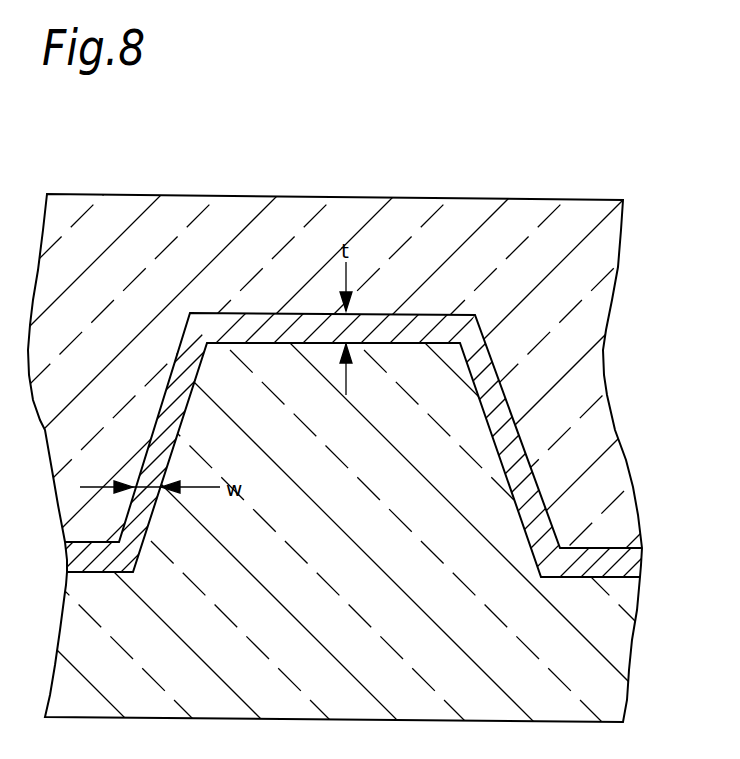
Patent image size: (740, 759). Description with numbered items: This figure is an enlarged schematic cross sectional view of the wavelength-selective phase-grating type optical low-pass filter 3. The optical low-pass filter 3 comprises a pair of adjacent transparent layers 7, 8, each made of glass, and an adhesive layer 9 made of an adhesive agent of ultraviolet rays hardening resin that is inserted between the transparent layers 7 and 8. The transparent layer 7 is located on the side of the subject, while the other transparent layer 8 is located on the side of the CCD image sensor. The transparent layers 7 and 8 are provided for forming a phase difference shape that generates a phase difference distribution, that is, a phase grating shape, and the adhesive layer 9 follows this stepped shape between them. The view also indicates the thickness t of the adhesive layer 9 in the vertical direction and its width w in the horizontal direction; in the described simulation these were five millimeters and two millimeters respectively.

The optical low-pass filter 3 is at (348, 148).
The transparent layer 7 is at (590, 325).
The transparent layer 8 is at (622, 642).
The adhesive layer 9 is at (623, 567).